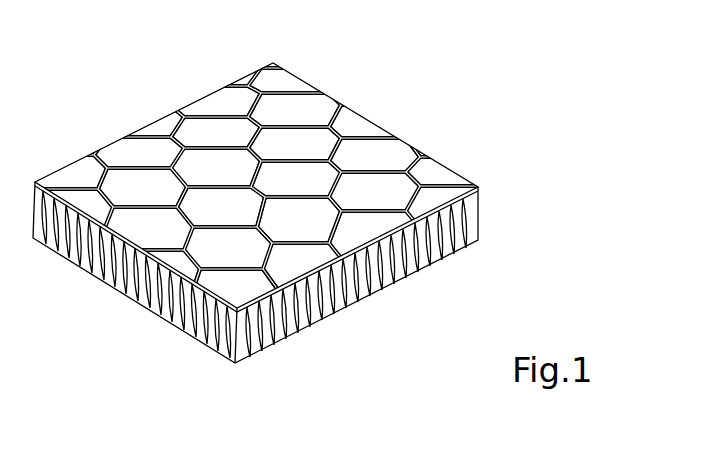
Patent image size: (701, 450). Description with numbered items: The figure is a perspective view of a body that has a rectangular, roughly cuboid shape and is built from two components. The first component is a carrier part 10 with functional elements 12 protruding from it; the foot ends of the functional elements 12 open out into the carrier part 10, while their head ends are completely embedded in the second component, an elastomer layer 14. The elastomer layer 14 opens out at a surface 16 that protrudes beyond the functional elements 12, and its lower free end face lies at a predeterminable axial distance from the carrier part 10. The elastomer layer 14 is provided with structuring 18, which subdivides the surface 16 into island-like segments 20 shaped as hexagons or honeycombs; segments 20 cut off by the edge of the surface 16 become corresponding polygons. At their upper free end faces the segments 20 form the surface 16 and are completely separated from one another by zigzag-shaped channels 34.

The carrier part 10 is at (483, 243).
The functional elements 12 is at (122, 295).
The elastomer layer 14 is at (393, 155).
The surface 16 is at (298, 145).
The structuring 18 is at (227, 113).
The island-like segments 20 is at (208, 163).
The zigzag-shaped channels 34 is at (207, 113).